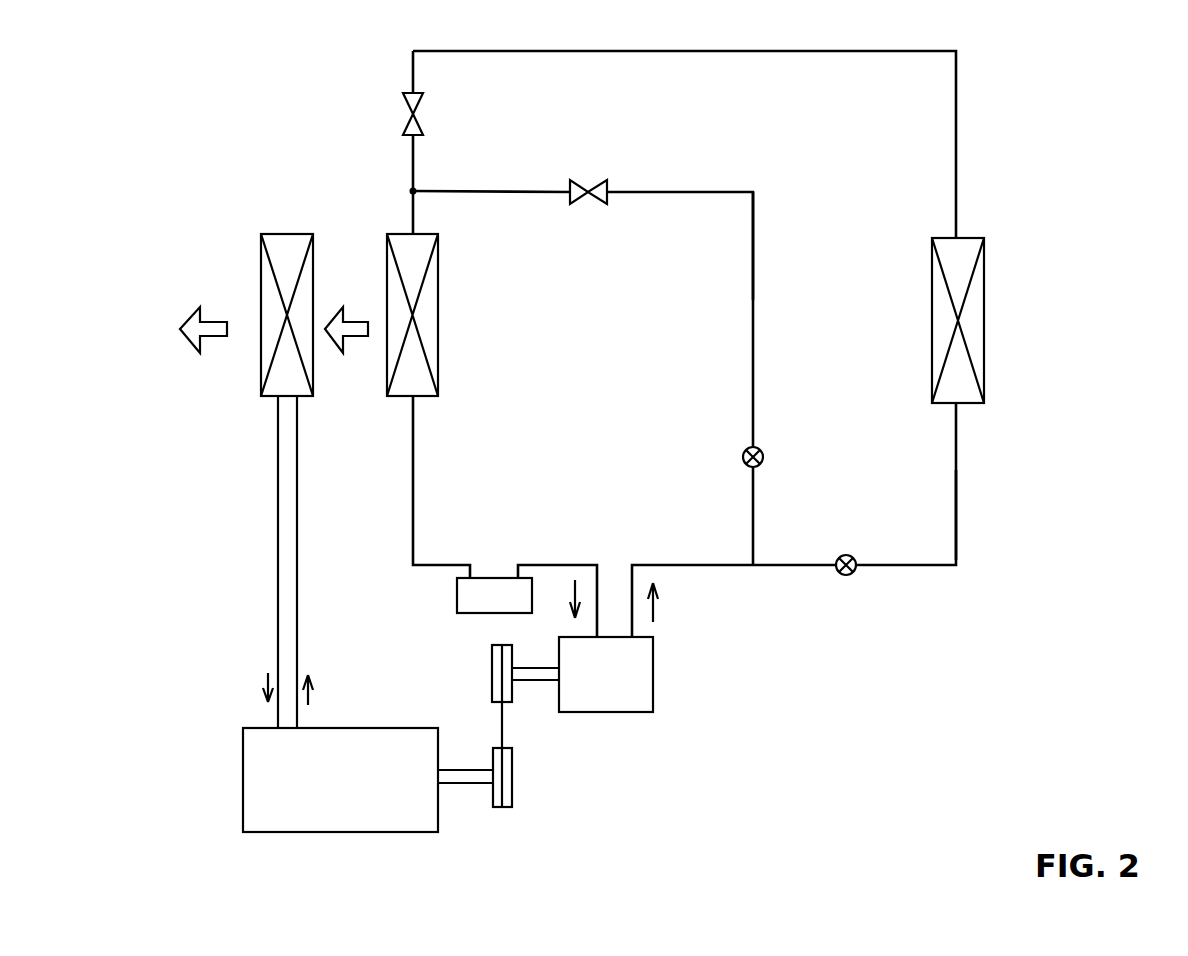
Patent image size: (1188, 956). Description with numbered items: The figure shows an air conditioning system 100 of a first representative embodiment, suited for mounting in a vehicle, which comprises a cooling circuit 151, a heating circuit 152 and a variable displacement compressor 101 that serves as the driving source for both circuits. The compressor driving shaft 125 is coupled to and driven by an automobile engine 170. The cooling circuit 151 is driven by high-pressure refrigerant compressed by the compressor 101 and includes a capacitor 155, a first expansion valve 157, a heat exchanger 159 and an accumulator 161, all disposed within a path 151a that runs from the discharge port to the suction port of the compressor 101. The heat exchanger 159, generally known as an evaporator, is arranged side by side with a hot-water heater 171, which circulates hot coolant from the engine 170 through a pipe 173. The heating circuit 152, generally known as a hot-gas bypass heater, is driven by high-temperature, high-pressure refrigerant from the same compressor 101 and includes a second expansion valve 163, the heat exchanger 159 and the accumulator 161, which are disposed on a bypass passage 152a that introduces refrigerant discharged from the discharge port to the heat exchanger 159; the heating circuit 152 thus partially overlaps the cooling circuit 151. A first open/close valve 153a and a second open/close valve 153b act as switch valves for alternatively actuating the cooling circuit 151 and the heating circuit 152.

The air conditioning system 100 is at (898, 698).
The variable displacement compressor 101 is at (653, 687).
The compressor driving shaft 125 is at (537, 680).
The cooling circuit 151 is at (956, 466).
The path 151a is at (956, 520).
The heating circuit 152 is at (753, 328).
The bypass passage 152a is at (753, 245).
The first open/close valve 153a is at (846, 575).
The second open/close valve 153b is at (763, 457).
The capacitor 155 is at (984, 293).
The first expansion valve 157 is at (405, 104).
The heat exchanger 159 is at (438, 283).
The accumulator 161 is at (495, 592).
The second expansion valve 163 is at (604, 182).
The automobile engine 170 is at (250, 790).
The hot-water heater 171 is at (288, 234).
The pipe 173 is at (278, 538).